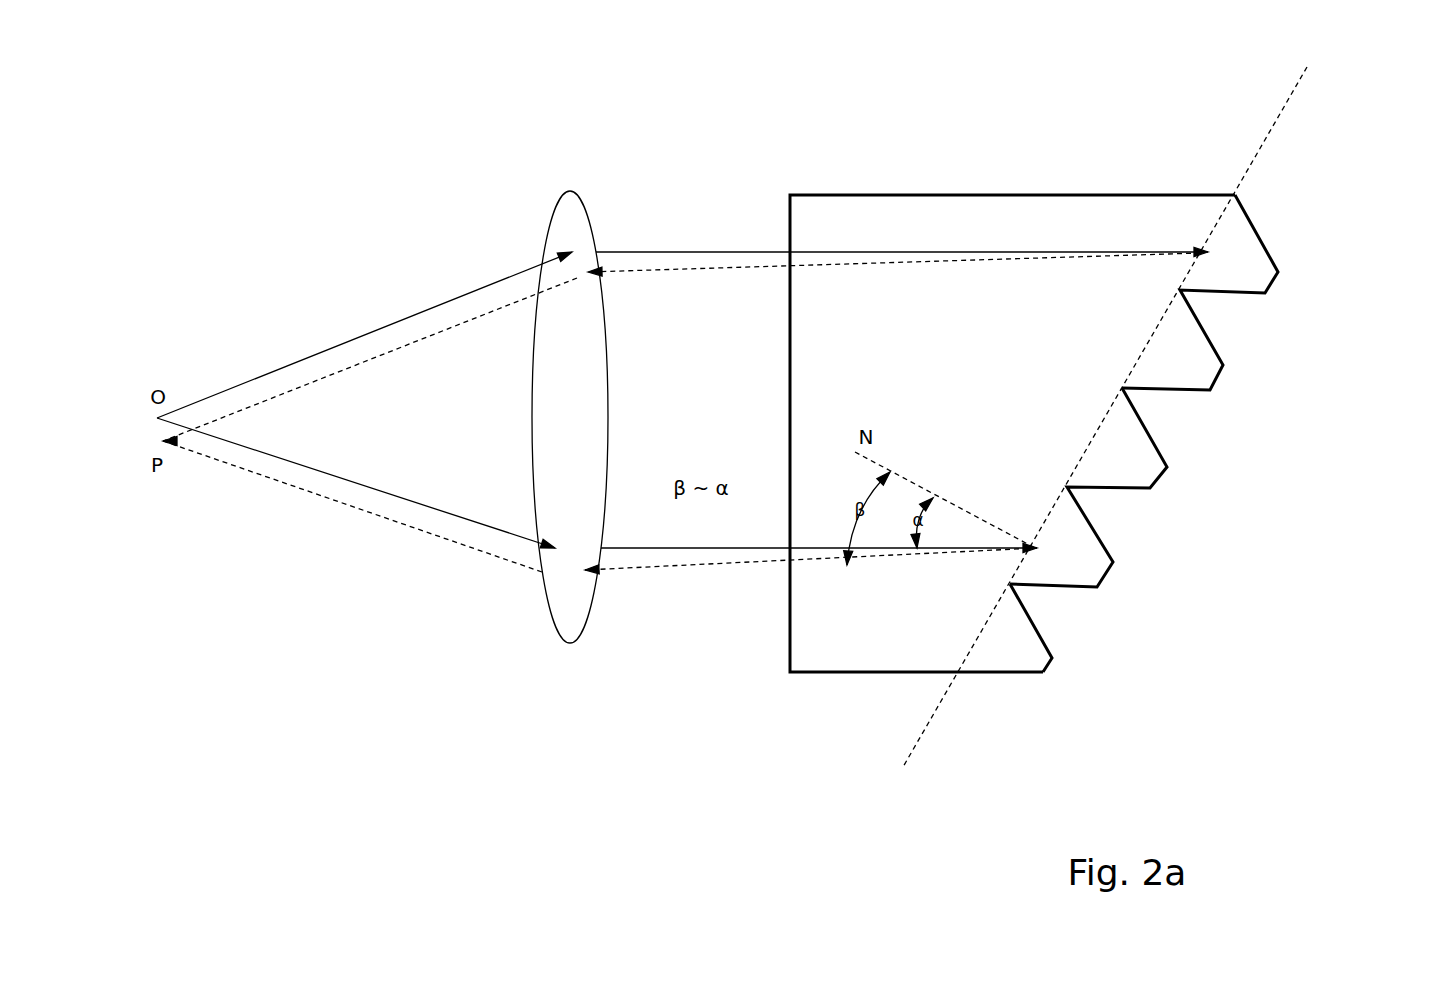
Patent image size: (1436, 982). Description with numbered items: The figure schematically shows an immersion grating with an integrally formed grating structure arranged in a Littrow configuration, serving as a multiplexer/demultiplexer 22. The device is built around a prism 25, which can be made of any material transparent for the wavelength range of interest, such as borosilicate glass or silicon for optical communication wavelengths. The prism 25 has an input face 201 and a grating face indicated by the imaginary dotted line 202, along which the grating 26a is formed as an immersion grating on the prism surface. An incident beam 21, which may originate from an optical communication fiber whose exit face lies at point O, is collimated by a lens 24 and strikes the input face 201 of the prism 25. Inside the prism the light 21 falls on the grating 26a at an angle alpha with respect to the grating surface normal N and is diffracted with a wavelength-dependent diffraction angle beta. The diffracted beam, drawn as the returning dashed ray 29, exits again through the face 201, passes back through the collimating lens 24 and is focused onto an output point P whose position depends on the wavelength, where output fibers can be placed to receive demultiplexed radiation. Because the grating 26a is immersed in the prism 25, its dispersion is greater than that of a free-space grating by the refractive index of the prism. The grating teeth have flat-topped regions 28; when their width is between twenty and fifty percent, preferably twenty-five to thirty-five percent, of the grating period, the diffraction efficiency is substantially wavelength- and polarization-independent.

The incident beam 21 is at (455, 295).
The multiplexer/demultiplexer 22 is at (995, 527).
The lens 24 is at (570, 643).
The prism 25 is at (1013, 658).
The grating 26a is at (1137, 488).
The flat-topped regions 28 is at (1222, 373).
The reflected light ray 29 is at (442, 542).
The input face 201 is at (783, 648).
The grating face 202 is at (1258, 158).